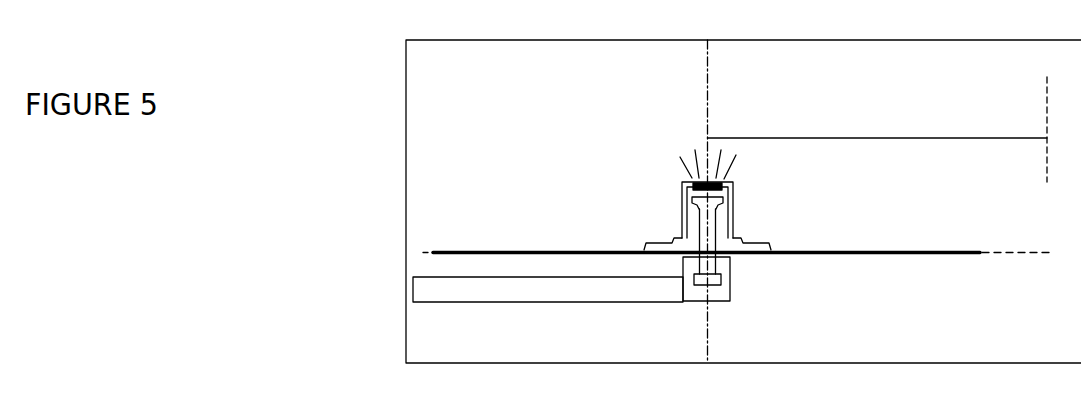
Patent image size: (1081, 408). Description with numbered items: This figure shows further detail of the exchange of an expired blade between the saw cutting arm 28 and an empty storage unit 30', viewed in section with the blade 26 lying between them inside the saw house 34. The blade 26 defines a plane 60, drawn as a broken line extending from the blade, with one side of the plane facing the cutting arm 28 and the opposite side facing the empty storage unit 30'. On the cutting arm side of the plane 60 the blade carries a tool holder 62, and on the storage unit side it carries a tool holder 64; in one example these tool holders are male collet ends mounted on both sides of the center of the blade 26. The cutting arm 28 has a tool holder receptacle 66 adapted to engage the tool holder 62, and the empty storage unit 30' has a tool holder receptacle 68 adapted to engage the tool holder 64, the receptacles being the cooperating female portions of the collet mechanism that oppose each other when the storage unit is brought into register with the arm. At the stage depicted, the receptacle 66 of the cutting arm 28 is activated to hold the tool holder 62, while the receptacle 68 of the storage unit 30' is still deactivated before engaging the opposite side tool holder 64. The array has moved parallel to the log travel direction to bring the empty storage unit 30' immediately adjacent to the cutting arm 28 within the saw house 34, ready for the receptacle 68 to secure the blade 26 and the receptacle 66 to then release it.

The cutting arm 28 is at (875, 137).
The blade 26 is at (888, 255).
The plane 60 is at (1020, 258).
The empty storage unit 30' is at (548, 303).
The tool holder receptacle 66 is at (682, 218).
The tool holder receptacle 68 is at (683, 272).
The tool holder 62 is at (718, 222).
The tool holder 64 is at (722, 267).
The saw house 34 is at (1023, 339).